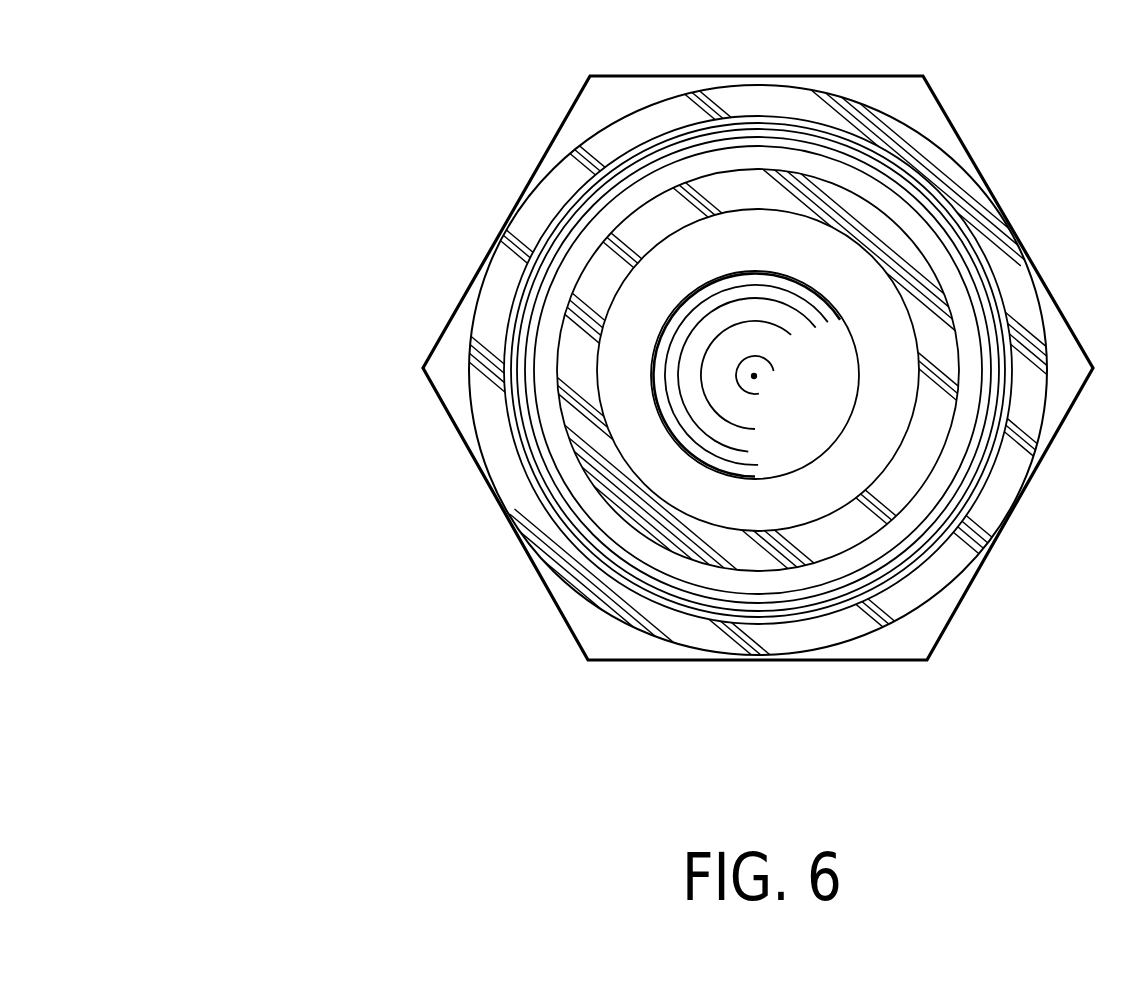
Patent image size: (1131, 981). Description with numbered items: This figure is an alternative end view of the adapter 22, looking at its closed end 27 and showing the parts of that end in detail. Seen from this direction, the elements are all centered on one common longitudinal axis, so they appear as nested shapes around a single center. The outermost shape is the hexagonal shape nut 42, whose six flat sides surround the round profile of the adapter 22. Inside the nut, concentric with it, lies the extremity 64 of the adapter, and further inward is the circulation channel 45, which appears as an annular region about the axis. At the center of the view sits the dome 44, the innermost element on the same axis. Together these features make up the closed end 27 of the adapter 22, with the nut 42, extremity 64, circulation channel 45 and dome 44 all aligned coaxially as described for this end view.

The adapter 22 is at (645, 340).
The closed end 27 is at (598, 370).
The hexagonal shape nut 42 is at (660, 372).
The dome 44 is at (525, 375).
The circulation channel 45 is at (573, 370).
The extremity 64 is at (677, 376).